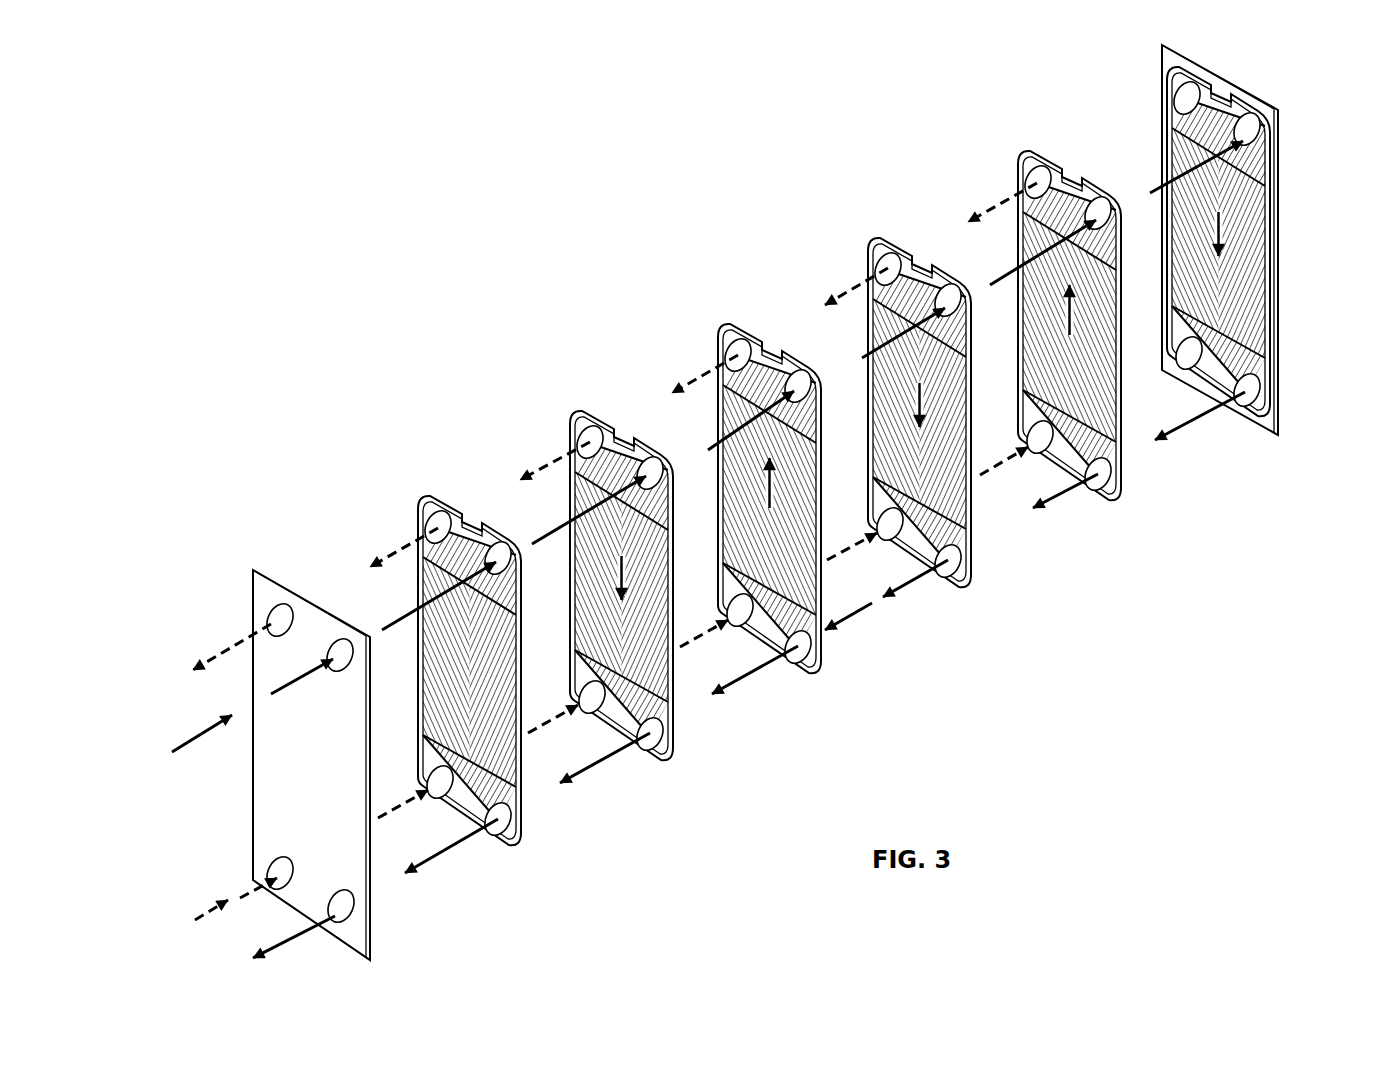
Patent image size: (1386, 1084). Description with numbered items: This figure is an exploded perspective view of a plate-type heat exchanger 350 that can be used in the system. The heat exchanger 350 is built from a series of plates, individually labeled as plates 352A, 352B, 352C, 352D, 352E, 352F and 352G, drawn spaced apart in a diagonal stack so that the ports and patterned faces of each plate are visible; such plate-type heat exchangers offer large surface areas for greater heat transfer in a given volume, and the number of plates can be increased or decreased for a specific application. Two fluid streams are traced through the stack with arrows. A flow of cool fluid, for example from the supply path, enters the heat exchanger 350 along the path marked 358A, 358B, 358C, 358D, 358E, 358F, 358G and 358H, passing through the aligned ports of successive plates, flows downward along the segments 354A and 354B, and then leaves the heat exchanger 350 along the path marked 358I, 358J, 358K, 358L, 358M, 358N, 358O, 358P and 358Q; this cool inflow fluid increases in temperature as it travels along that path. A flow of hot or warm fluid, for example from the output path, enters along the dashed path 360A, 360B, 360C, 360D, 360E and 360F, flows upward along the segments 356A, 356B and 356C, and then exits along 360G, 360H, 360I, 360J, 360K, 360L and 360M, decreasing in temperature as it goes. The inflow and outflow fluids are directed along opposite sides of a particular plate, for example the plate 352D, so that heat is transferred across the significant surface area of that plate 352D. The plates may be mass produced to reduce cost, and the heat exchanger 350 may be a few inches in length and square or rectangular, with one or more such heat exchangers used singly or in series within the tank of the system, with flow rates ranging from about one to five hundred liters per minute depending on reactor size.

The plate-type heat exchanger 350 is at (412, 300).
The plate 352A is at (283, 577).
The plate 352B is at (424, 492).
The plate 352C is at (576, 407).
The plate 352D is at (725, 320).
The plate 352E is at (876, 234).
The plate 352F is at (1026, 147).
The plate 352G is at (1270, 98).
The downward flow path 354A is at (764, 468).
The downward flow path 354B is at (1073, 338).
The upward flow path 356A is at (615, 560).
The upward flow path 356B is at (913, 386).
The upward flow path 356C is at (1225, 220).
The cool fluid inflow path 358A is at (200, 740).
The cool fluid inflow path 358B is at (292, 688).
The cool fluid inflow path 358C is at (420, 608).
The cool fluid inflow path 358D is at (580, 515).
The cool fluid inflow path 358E is at (730, 435).
The cool fluid inflow path 358F is at (880, 350).
The cool fluid inflow path 358G is at (1005, 276).
The cool fluid inflow path 358H is at (1140, 197).
The cool fluid outflow path 358I is at (1200, 433).
The cool fluid outflow path 358J is at (1075, 492).
The cool fluid outflow path 358K is at (918, 573).
The cool fluid outflow path 358L is at (873, 605).
The cool fluid outflow path 358M is at (762, 672).
The cool fluid outflow path 358N is at (612, 760).
The cool fluid outflow path 358O is at (455, 850).
The cool fluid outflow path 358P is at (338, 898).
The cool fluid outflow path 358Q is at (292, 938).
The warm fluid inflow path 360A is at (196, 920).
The warm fluid inflow path 360B is at (240, 897).
The warm fluid inflow path 360C is at (380, 822).
The warm fluid inflow path 360D is at (530, 737).
The warm fluid inflow path 360E is at (683, 650).
The warm fluid inflow path 360F is at (843, 556).
The warm fluid outflow path 360G is at (983, 478).
The warm fluid outflow path 360H is at (1010, 207).
The warm fluid outflow path 360I is at (848, 262).
The warm fluid outflow path 360J is at (690, 355).
The warm fluid outflow path 360K is at (540, 445).
The warm fluid outflow path 360L is at (408, 556).
The warm fluid outflow path 360M is at (238, 635).